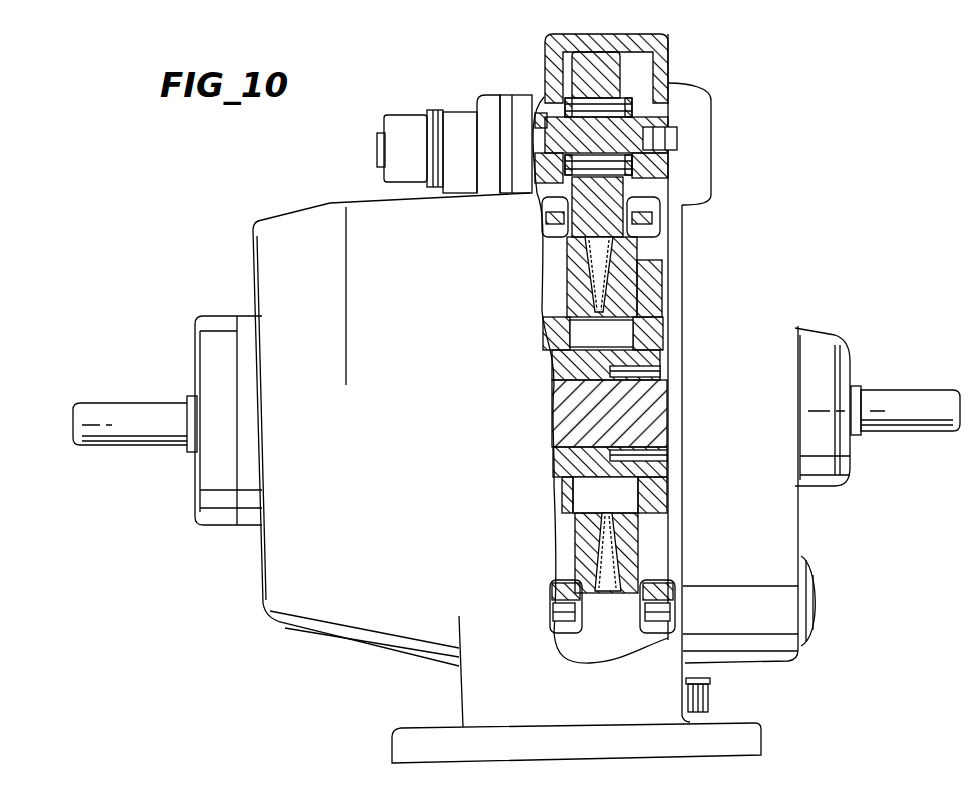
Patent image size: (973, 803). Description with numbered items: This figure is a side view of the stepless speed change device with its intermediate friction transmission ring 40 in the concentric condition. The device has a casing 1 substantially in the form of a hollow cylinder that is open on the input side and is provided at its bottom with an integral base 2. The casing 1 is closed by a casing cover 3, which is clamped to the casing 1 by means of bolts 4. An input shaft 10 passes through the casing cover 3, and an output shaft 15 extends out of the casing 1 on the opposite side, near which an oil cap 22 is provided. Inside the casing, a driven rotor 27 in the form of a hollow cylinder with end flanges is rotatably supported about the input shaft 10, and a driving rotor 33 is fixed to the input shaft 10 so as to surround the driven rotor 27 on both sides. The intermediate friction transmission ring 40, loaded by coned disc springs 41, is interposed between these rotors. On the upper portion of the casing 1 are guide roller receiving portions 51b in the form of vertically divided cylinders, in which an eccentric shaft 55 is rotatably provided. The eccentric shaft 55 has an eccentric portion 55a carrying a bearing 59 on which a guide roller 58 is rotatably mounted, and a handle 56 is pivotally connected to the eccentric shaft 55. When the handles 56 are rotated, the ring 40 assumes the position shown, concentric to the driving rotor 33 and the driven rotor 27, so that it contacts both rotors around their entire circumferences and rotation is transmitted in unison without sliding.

The casing 1 is at (272, 227).
The base 2 is at (392, 736).
The casing cover 3 is at (795, 521).
The bolts 4 is at (708, 693).
The input shaft 10 is at (908, 393).
The output shaft 15 is at (100, 408).
The oil cap 22 is at (823, 594).
The driven rotor 27 is at (668, 343).
The driving rotor 33 is at (648, 633).
The intermediate friction transmission ring 40 is at (636, 288).
The coned disc springs 41 is at (800, 326).
The guide roller receiving portions 51b is at (557, 33).
The eccentric shaft 55 is at (536, 127).
The eccentric portion 55a is at (655, 127).
The handle 56 is at (397, 117).
The guide roller 58 is at (605, 60).
The bearing 59 is at (610, 99).